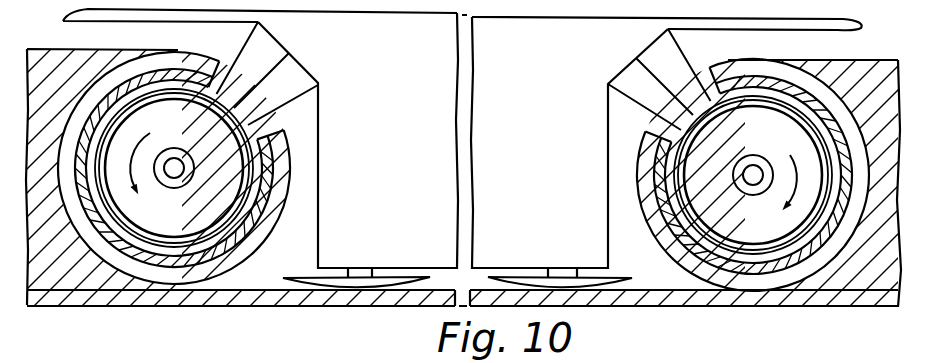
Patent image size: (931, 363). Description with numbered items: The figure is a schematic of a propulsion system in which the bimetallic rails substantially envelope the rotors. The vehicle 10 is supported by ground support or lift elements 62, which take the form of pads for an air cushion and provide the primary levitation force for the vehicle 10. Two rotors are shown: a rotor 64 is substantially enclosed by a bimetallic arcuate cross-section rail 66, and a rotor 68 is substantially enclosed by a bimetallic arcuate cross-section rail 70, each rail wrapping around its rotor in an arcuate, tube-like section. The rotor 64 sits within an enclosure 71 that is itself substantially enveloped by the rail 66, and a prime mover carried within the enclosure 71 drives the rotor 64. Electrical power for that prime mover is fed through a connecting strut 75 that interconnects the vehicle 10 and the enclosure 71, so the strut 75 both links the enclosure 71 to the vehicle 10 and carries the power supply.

The vehicle 10 is at (233, 14).
The ground support or lift elements 62 is at (338, 278).
The rotor 64 is at (757, 247).
The bimetallic arcuate cross-section rail 66 is at (813, 250).
The rotor 68 is at (140, 233).
The bimetallic arcuate cross-section rail 70 is at (202, 262).
The enclosure 71 is at (803, 118).
The connecting strut 75 is at (625, 110).